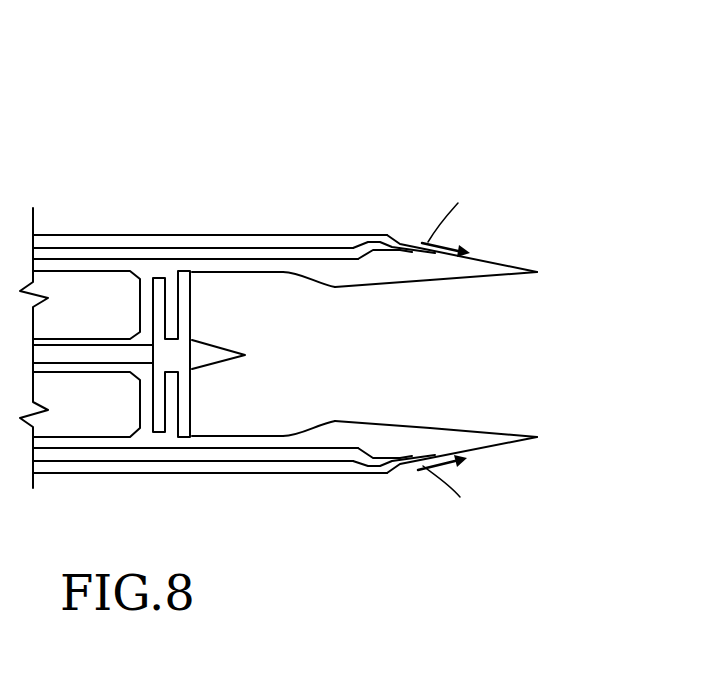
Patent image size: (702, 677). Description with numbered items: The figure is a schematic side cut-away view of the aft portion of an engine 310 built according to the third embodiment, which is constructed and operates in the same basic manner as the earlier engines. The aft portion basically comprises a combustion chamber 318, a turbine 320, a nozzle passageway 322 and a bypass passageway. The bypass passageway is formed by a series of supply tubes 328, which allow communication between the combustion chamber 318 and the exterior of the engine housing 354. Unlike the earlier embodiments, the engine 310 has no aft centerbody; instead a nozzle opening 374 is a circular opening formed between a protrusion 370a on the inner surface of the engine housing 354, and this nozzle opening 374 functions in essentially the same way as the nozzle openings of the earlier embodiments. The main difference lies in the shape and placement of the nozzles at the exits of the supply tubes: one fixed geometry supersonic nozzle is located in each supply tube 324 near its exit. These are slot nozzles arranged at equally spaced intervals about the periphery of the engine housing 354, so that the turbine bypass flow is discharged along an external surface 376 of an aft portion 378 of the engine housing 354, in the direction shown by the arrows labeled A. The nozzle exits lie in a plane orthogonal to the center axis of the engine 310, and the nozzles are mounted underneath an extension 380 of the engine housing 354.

The engine 310 is at (341, 114).
The combustion chamber 318 is at (97, 297).
The turbine 320 is at (162, 264).
The ink flow channel 322 is at (280, 315).
The supply tube 324 is at (213, 233).
The supply tubes 328 is at (296, 243).
The engine housing 354 is at (57, 243).
The protrusion 370a is at (343, 280).
The nozzle opening 374 is at (338, 302).
The external surface 376 is at (503, 263).
The aft portion 378 is at (452, 268).
The extension 380 is at (388, 234).